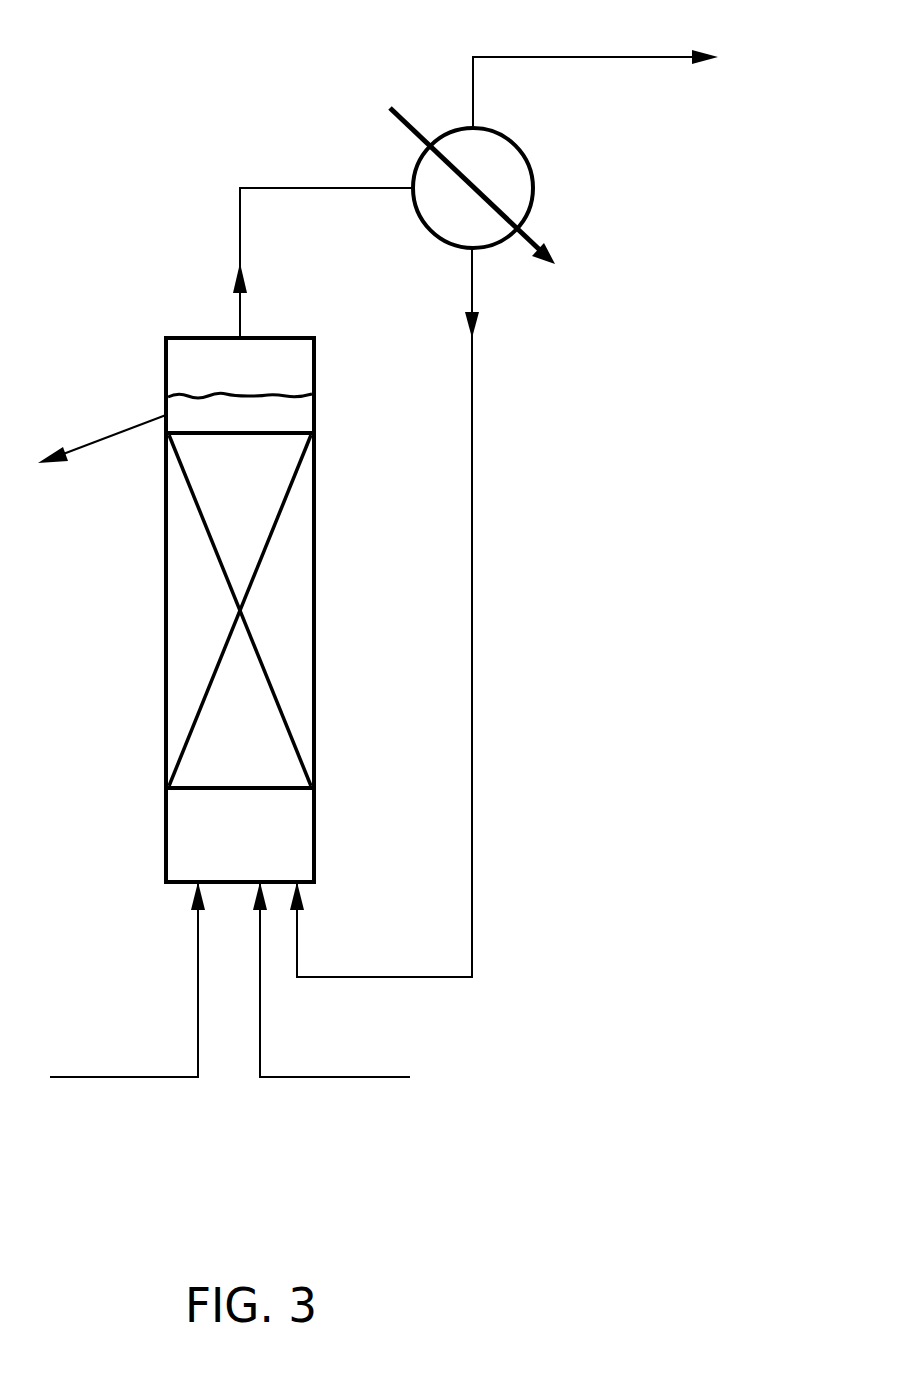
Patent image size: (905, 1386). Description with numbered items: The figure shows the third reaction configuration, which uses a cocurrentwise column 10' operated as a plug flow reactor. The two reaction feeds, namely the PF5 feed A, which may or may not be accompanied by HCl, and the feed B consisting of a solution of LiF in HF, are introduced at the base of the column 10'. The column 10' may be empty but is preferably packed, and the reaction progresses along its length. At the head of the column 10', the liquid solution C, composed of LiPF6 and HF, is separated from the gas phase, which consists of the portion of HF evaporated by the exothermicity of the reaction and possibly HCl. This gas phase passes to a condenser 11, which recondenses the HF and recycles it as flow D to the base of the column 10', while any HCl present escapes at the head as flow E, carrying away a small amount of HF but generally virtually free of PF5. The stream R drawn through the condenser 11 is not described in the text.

The cocurrentwise column 10' is at (194, 610).
The condenser 11 is at (523, 188).
The PF5 reaction feed A is at (127, 979).
The LiF in HF solution feed B is at (338, 979).
The liquid solution of LiPF6 and HF C is at (102, 429).
The recycled HF flow D is at (413, 612).
The HCl off-gas flow E is at (595, 65).
The cooling medium R is at (468, 165).